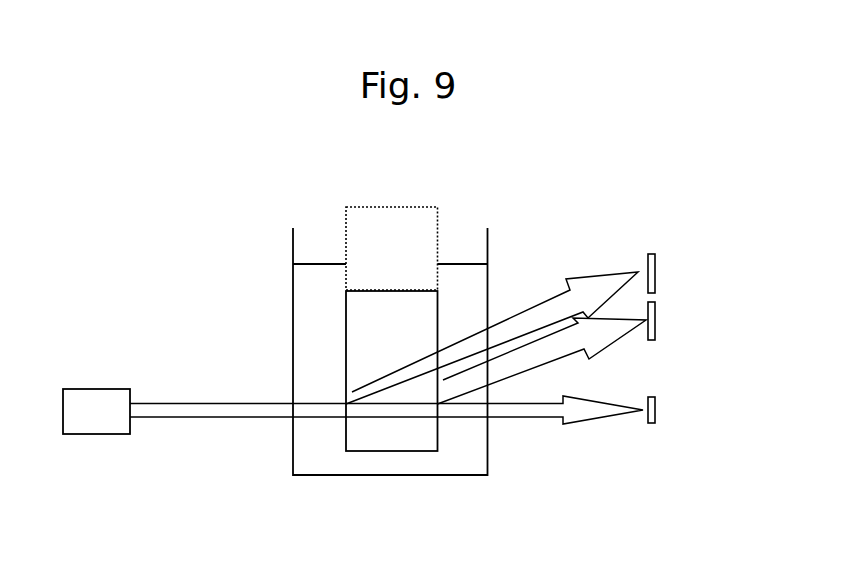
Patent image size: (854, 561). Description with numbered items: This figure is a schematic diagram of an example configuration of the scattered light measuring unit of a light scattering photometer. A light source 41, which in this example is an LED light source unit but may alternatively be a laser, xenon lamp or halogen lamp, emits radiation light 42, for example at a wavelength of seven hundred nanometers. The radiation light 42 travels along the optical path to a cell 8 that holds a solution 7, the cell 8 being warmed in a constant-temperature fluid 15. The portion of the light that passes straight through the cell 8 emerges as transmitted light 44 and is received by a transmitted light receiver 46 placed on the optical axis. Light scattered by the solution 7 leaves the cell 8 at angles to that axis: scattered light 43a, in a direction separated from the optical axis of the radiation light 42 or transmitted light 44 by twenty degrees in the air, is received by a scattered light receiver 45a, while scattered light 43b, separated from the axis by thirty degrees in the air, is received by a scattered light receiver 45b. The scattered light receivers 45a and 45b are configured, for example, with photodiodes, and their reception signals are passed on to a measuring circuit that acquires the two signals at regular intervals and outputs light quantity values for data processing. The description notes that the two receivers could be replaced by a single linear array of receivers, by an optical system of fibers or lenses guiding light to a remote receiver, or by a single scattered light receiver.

The solution 7 is at (377, 290).
The cell 8 is at (396, 206).
The constant-temperature fluid 15 is at (325, 270).
The light source 41 is at (93, 388).
The radiation light 42 is at (192, 402).
The scattered light 43a is at (614, 344).
The scattered light 43b is at (597, 275).
The transmitted light 44 is at (585, 421).
The scattered light receiver 45a is at (656, 320).
The scattered light receiver 45b is at (656, 270).
The transmitted light receiver 46 is at (656, 410).